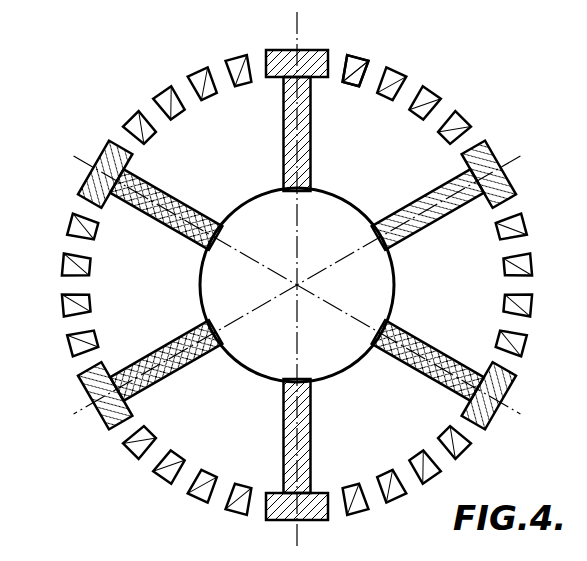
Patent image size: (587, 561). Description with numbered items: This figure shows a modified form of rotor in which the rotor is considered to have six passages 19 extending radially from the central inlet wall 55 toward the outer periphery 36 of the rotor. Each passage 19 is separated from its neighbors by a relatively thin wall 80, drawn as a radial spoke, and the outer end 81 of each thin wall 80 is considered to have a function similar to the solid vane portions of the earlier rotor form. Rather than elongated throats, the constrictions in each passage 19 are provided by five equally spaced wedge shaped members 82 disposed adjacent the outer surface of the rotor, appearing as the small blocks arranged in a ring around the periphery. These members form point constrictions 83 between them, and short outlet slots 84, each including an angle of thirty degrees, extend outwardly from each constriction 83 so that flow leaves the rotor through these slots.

The radial passage 19 is at (152, 147).
The outer periphery 36 is at (80, 196).
The inlet wall 55 is at (200, 289).
The thin wall 80 is at (284, 119).
The outer end of thin wall 81 is at (282, 48).
The wedge shaped member 82 is at (358, 60).
The point constriction 83 is at (361, 84).
The outlet slot 84 is at (478, 135).